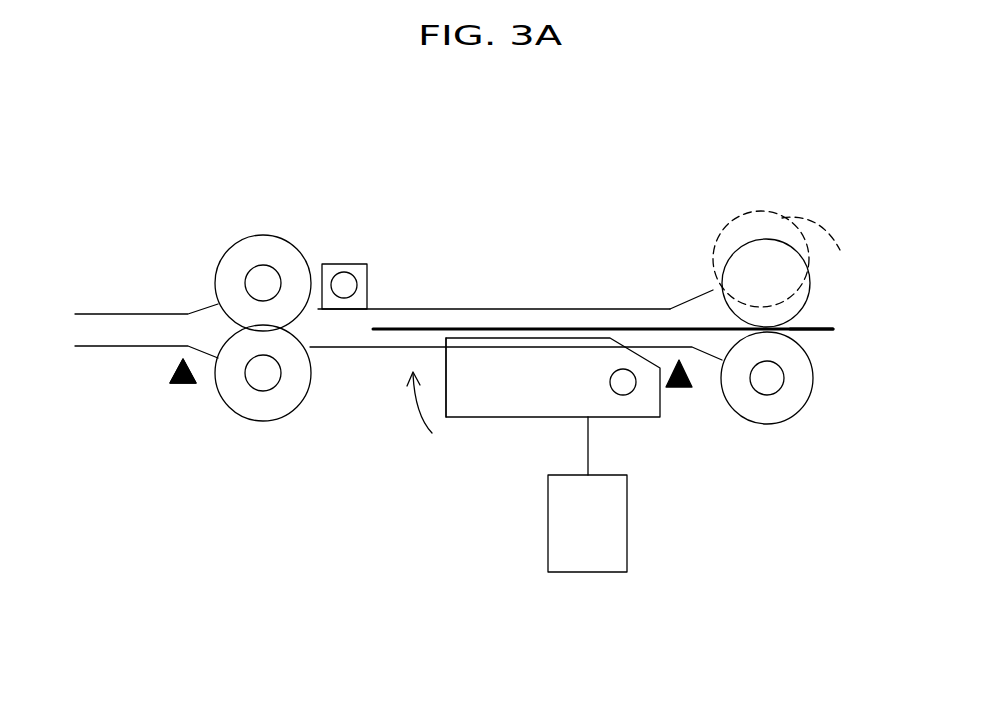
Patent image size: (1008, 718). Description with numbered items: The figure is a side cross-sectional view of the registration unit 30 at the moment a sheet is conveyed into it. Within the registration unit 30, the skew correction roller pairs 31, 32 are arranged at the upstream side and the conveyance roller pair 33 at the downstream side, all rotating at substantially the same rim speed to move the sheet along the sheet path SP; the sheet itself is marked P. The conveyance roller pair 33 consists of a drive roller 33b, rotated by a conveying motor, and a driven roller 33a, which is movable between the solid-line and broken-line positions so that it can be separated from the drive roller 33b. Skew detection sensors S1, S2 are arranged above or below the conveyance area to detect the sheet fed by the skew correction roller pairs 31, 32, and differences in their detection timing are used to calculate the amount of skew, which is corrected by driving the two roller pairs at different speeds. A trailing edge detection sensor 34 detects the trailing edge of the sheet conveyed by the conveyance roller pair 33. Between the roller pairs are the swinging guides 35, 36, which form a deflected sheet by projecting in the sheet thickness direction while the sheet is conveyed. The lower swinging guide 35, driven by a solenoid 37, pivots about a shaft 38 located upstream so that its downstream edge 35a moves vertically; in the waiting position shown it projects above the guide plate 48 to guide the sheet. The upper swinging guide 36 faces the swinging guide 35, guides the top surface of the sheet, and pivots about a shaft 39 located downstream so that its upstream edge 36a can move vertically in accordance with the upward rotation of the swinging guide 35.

The registration unit 30 is at (476, 170).
The skew correction roller pair 31 is at (253, 245).
The skew correction roller pair 32 is at (263, 373).
The shaft 39 is at (343, 280).
The swinging guide 36 is at (403, 305).
The upstream edge 36a is at (700, 295).
The guide plate 48 is at (362, 348).
The sheet path SP is at (508, 320).
The sheet P is at (808, 331).
The conveyance roller pair 33 is at (763, 248).
The driven roller 33a is at (802, 298).
The drive roller 33b is at (775, 413).
The swinging guide 35 is at (513, 405).
The downstream edge 35a is at (460, 373).
The shaft 38 is at (618, 388).
The solenoid 37 is at (617, 558).
The trailing edge detection sensor 34 is at (678, 390).
The skew detection sensor S1 is at (181, 387).
The skew detection sensor S2 is at (183, 371).